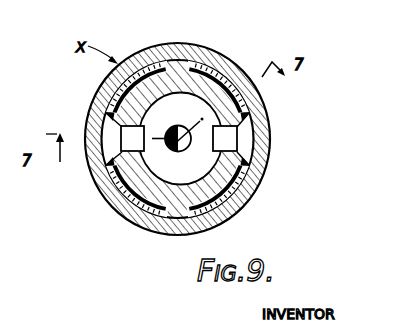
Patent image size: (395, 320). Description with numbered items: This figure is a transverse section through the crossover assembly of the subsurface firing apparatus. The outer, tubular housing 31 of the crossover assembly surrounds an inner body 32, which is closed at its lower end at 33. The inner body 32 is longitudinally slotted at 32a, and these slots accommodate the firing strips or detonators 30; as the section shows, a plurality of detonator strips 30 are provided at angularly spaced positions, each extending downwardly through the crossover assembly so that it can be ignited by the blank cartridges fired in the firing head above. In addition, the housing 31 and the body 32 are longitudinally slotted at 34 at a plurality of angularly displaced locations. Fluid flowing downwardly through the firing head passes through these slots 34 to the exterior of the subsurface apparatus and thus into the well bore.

The firing strip or detonator 30 is at (183, 135).
The housing 31 is at (187, 46).
The inner body 32 is at (174, 92).
The longitudinal slot 32a is at (110, 96).
The closed lower end 33 is at (122, 181).
The slots 34 is at (119, 128).